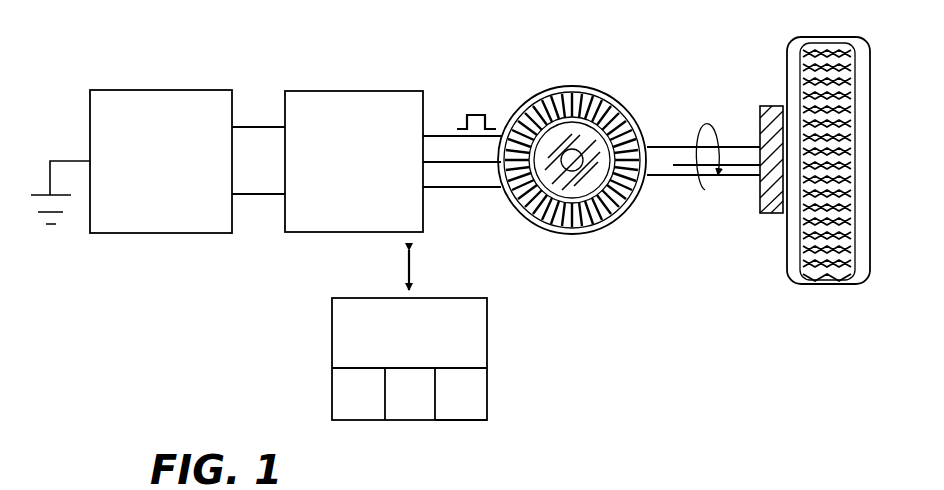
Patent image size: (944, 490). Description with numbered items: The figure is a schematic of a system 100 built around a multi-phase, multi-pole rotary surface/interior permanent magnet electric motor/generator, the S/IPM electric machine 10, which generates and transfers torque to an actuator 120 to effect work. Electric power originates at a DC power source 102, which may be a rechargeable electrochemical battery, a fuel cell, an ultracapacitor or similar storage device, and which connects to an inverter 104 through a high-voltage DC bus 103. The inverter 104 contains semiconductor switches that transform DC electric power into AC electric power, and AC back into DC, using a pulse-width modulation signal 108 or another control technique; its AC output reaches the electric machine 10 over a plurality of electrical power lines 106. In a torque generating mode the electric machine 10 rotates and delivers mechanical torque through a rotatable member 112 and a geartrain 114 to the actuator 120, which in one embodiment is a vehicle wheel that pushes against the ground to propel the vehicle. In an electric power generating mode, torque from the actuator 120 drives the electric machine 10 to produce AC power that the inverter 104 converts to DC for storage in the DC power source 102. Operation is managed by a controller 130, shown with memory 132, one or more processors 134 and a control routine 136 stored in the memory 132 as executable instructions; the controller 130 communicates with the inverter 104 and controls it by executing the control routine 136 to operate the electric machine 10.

The system 100 is at (210, 66).
The DC power source 102 is at (161, 161).
The high-voltage DC bus 103 is at (240, 117).
The inverter 104 is at (354, 161).
The electrical power lines 106 is at (444, 185).
The pulse-width modulation signal 108 is at (480, 113).
The S/IPM electric machine 10 is at (573, 87).
The rotatable member 112 is at (728, 142).
The geartrain 114 is at (770, 215).
The actuator 120 is at (820, 285).
The controller 130 is at (409, 335).
The memory 132 is at (362, 396).
The processors 134 is at (410, 396).
The control routine 136 is at (457, 396).